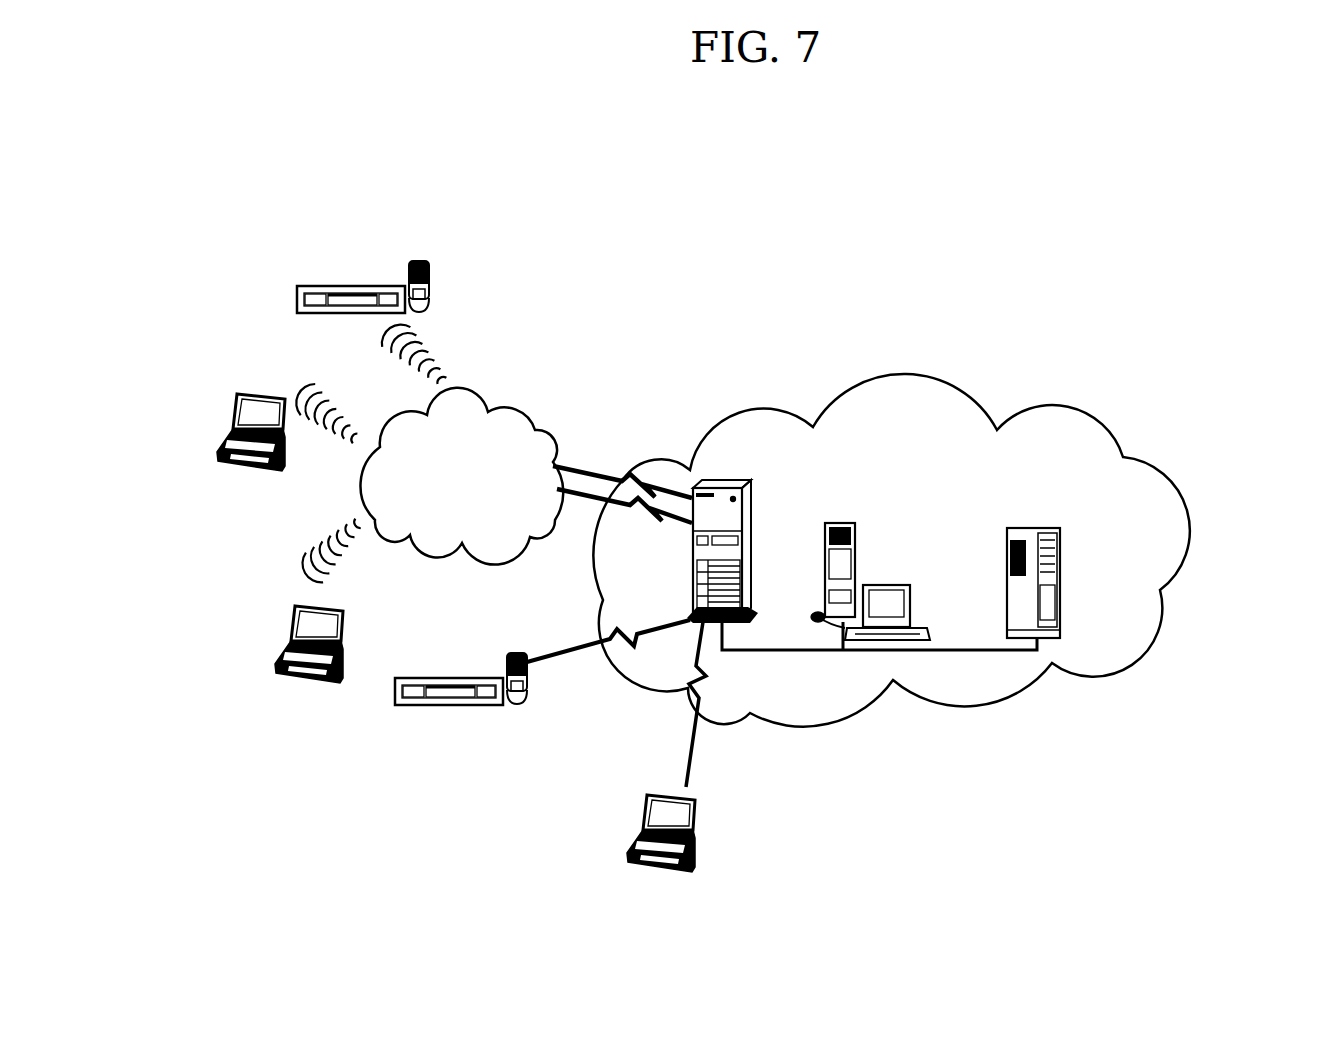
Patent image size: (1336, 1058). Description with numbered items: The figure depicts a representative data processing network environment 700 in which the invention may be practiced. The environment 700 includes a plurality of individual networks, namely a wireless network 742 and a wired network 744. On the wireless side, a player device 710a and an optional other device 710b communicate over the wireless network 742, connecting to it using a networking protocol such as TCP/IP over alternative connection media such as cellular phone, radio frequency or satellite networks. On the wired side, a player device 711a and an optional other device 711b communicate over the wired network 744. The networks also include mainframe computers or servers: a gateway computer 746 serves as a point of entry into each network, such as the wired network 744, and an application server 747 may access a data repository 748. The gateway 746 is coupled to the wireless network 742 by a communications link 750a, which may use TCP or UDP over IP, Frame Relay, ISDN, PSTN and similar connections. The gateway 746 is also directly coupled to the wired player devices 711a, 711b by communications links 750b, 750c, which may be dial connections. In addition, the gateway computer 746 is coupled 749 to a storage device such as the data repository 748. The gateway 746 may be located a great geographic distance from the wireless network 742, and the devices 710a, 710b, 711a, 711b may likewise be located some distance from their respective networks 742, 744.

The data processing network environment 700 is at (699, 527).
The player device 710a is at (371, 320).
The other device 710b is at (287, 524).
The player device 711a is at (461, 695).
The other device 711b is at (661, 851).
The wireless network 742 is at (461, 474).
The wired network 744 is at (891, 545).
The gateway computer 746 is at (744, 534).
The application server 747 is at (870, 569).
The data repository 748 is at (1057, 583).
The coupling 749 is at (879, 651).
The communications link 750a is at (622, 501).
The communications link 750b is at (608, 640).
The communications link 750c is at (659, 704).